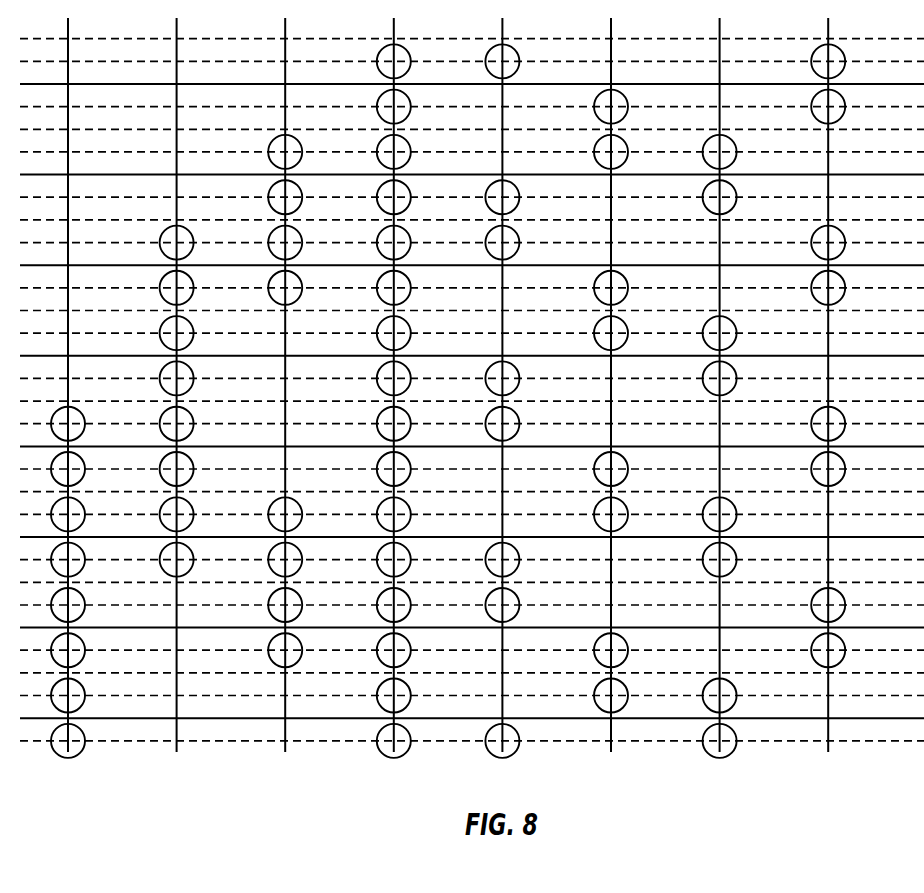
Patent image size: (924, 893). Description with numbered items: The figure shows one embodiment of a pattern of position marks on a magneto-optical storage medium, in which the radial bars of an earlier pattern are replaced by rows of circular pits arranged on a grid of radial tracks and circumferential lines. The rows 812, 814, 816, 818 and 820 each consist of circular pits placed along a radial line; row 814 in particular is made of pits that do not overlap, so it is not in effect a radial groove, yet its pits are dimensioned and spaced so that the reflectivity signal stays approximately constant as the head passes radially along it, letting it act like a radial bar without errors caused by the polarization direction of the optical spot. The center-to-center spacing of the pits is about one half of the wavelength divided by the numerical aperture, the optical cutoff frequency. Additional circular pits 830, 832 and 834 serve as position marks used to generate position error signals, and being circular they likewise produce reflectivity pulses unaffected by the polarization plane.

The row of circular pits 812 is at (85, 602).
The row of circular pits 814 is at (194, 421).
The row of circular pits 816 is at (302, 240).
The row of circular pits 818 is at (302, 602).
The row of circular pits 820 is at (411, 330).
The circular pit position mark 830 is at (519, 240).
The circular pit position mark 832 is at (628, 330).
The circular pit position mark 834 is at (845, 240).